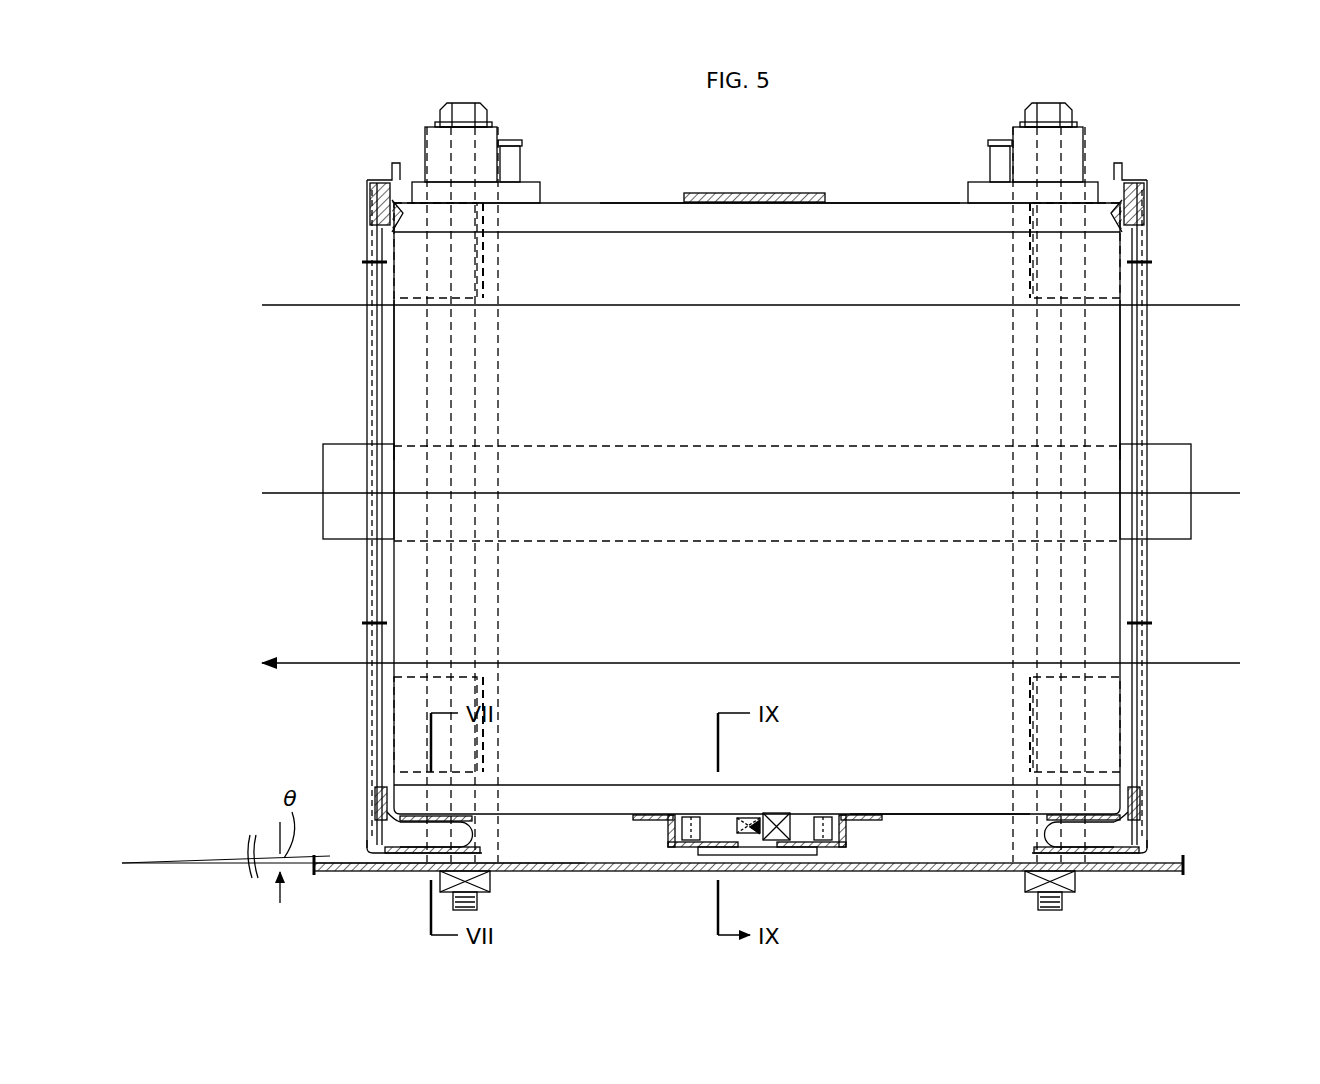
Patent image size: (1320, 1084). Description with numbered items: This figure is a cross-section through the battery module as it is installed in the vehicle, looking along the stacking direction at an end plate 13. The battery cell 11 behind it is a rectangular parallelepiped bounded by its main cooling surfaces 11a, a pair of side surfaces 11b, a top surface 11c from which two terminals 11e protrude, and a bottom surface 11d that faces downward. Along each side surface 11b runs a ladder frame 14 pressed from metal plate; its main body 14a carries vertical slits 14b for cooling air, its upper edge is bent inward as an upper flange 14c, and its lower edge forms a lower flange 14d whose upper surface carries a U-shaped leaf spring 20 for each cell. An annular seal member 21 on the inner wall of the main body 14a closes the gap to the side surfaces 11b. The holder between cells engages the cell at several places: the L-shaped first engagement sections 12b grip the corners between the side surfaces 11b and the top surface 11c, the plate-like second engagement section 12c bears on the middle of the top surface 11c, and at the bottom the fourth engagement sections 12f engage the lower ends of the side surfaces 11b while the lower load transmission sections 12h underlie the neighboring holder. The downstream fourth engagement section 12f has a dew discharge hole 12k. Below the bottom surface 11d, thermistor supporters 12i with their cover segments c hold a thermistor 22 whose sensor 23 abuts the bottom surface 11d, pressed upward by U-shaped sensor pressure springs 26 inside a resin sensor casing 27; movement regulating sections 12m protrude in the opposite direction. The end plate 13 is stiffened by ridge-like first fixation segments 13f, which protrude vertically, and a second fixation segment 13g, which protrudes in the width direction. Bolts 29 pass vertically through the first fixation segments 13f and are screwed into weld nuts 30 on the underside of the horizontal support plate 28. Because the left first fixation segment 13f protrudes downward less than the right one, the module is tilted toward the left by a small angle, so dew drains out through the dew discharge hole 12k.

The battery cell 11 is at (636, 200).
The main cooling surface 11a is at (838, 385).
The side surface 11b is at (390, 385).
The top surface 11c is at (895, 200).
The bottom surface 11d is at (942, 816).
The terminal 11e is at (515, 155).
The first engagement section 12b is at (380, 214).
The second engagement section 12c is at (800, 192).
The fourth engagement section 12f is at (374, 800).
The lower load transmission section 12h is at (412, 808).
The thermistor supporter 12i is at (658, 822).
The dew discharge hole 12k is at (388, 822).
The movement regulating section 12m is at (770, 850).
The end plate 13 is at (773, 476).
The first fixation segment 13f is at (428, 150).
The second fixation segment 13g is at (1166, 528).
The ladder frame 14 is at (753, 520).
The main body 14a is at (366, 346).
The slit 14b is at (378, 418).
The upper flange 14c is at (390, 175).
The lower flange 14d is at (430, 855).
The leaf spring 20 is at (473, 836).
The seal member 21 is at (372, 202).
The thermistor 22 is at (752, 813).
The sensor 23 is at (750, 835).
The sensor pressure spring 26 is at (695, 818).
The sensor casing 27 is at (790, 812).
The support plate 28 is at (940, 873).
The bolt 29 is at (478, 110).
The weld nut 30 is at (482, 882).
The cover segment c is at (712, 842).